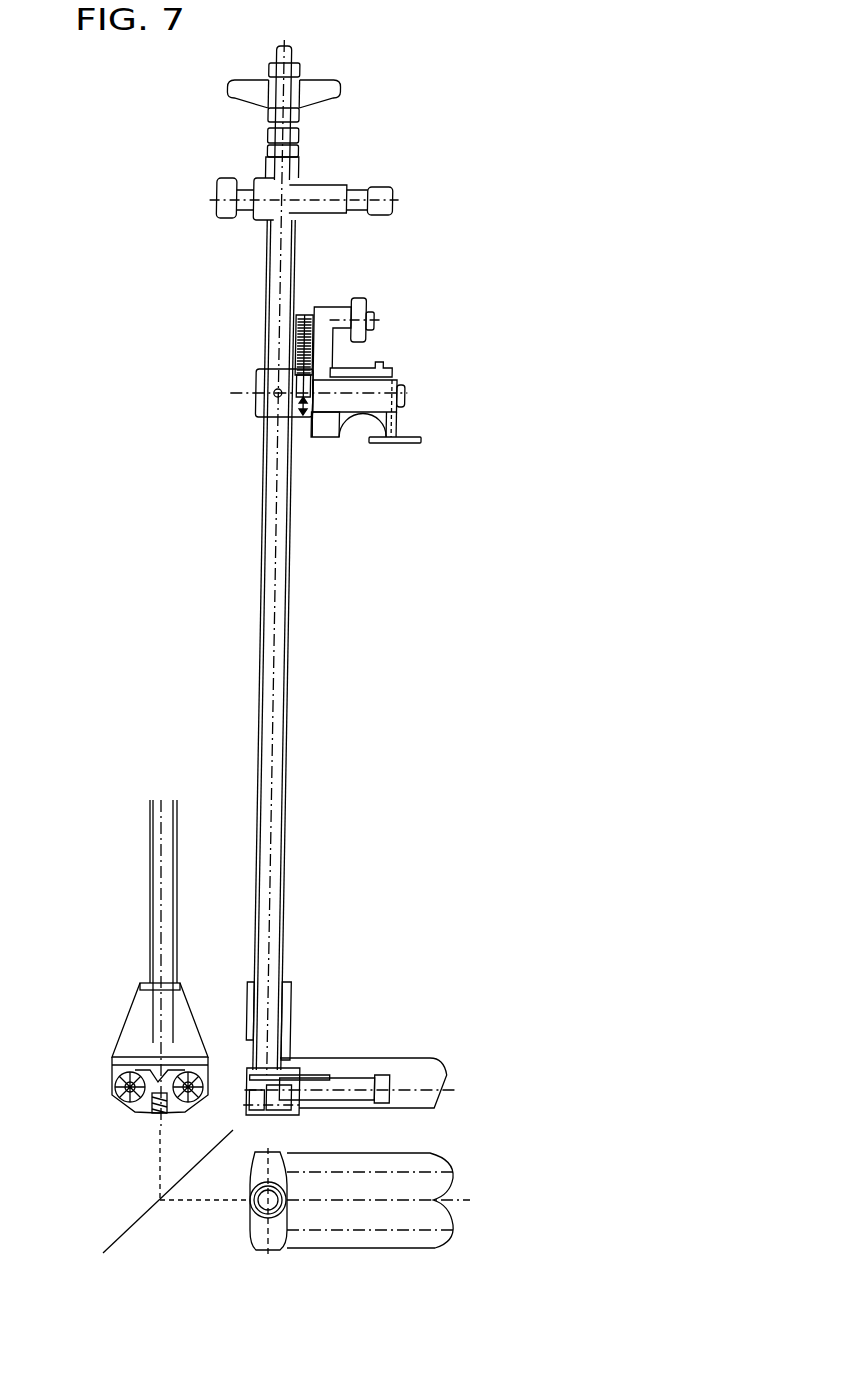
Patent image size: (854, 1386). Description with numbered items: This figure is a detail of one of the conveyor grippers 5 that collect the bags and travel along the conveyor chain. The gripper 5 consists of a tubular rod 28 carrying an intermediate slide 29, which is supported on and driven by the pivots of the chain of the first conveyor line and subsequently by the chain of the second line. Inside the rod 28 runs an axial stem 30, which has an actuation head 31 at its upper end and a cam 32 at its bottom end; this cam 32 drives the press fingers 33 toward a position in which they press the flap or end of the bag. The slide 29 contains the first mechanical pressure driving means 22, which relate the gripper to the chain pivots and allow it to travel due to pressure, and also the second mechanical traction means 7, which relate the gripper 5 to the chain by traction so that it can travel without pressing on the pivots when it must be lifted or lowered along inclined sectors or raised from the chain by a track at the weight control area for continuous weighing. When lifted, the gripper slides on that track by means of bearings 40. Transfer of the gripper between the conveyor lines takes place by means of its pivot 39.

The gripper 5 is at (255, 742).
The second mechanical traction drive means 7 is at (412, 430).
The first mechanical pressure driving means 22 is at (347, 425).
The tubular rod 28 is at (290, 843).
The intermediate slide 29 is at (327, 437).
The axial stem 30 is at (276, 580).
The actuation head 31 is at (318, 92).
The cam 32 is at (153, 1112).
The press fingers 33 is at (437, 1182).
The pivot 39 is at (380, 195).
The bearings 40 is at (358, 297).